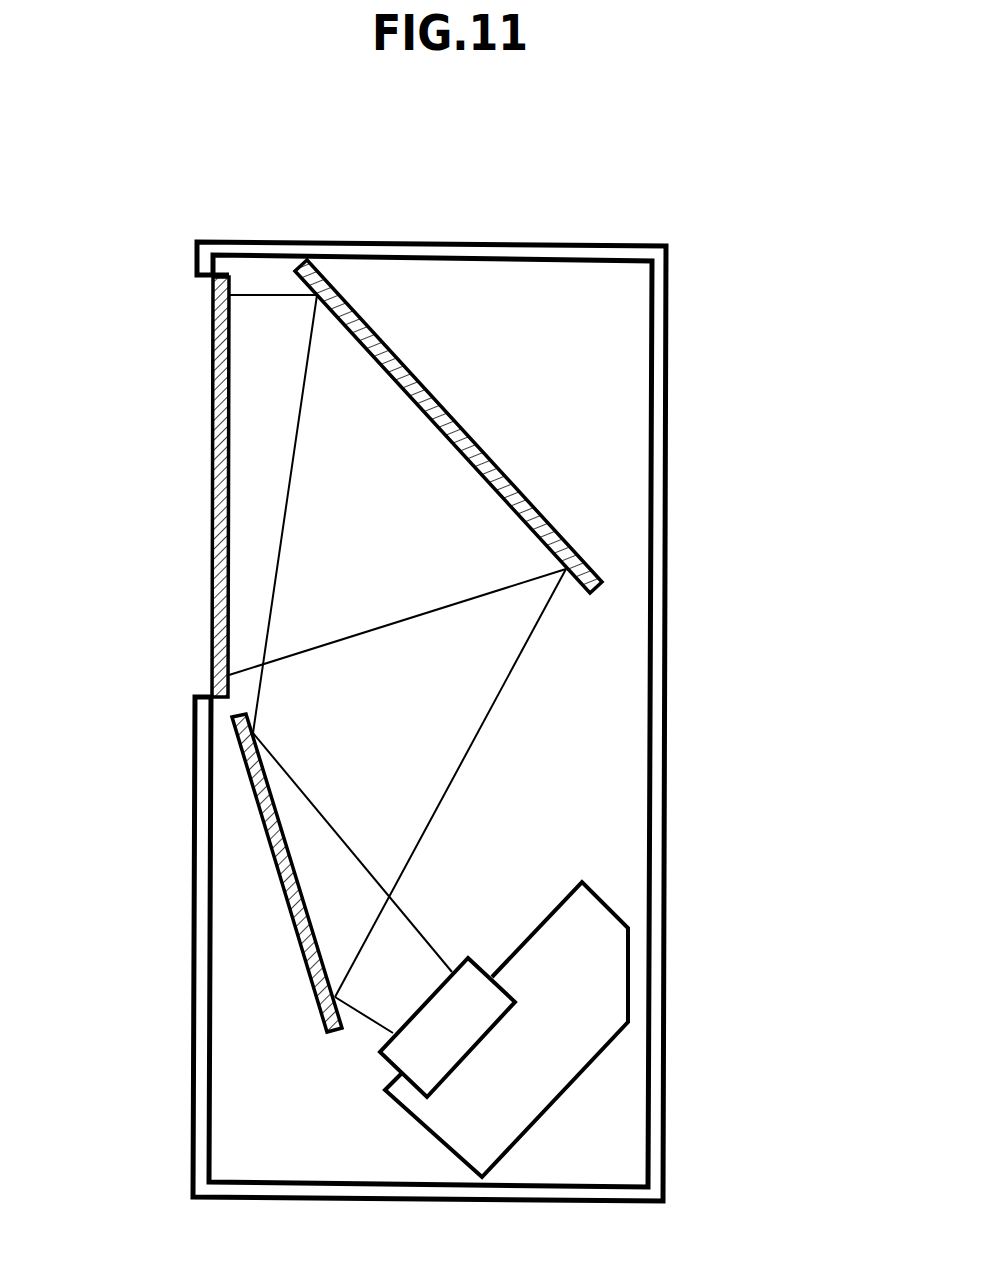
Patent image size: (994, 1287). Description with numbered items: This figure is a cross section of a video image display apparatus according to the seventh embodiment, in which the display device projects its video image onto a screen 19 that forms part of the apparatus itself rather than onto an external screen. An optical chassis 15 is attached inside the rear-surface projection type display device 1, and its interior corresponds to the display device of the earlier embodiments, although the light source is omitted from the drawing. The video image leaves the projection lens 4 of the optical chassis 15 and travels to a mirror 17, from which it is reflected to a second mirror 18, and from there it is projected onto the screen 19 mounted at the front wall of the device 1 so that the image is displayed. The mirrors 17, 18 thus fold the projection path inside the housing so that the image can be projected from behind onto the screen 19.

The rear-surface projection type display device 1 is at (608, 388).
The projection lens 4 is at (477, 1015).
The optical chassis 15 is at (588, 922).
The mirror 17 is at (280, 882).
The mirror 18 is at (530, 502).
The screen 19 is at (212, 472).